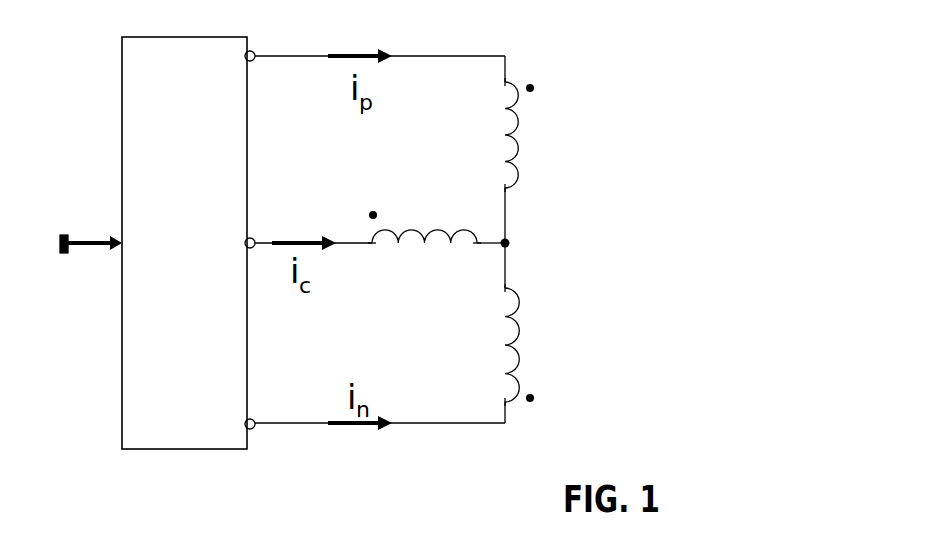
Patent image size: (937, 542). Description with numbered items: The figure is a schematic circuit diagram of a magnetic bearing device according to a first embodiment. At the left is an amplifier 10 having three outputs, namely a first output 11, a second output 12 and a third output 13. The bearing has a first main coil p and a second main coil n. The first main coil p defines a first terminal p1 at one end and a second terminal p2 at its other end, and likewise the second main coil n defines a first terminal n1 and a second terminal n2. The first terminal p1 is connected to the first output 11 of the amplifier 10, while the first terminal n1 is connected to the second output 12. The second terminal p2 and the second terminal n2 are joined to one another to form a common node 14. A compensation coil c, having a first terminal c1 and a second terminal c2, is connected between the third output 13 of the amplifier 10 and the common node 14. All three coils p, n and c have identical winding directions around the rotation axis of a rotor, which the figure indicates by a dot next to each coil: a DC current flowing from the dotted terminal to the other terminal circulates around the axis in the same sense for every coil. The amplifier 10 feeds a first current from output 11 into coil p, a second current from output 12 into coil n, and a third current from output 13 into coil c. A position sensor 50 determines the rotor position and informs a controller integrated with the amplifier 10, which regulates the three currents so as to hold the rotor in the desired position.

The amplifier 10 is at (199, 162).
The first output 11 is at (246, 60).
The second output 12 is at (246, 427).
The third output 13 is at (246, 246).
The common node 14 is at (510, 243).
The position sensor 50 is at (62, 240).
The first main coil p is at (512, 134).
The first terminal of the first main coil p1 is at (511, 79).
The second terminal of the first main coil p2 is at (509, 190).
The second main coil n is at (512, 346).
The first terminal of the second main coil n1 is at (509, 404).
The second terminal of the second main coil n2 is at (511, 288).
The compensation coil c is at (424, 230).
The first terminal of the compensation coil c1 is at (372, 250).
The second terminal of the compensation coil c2 is at (476, 250).